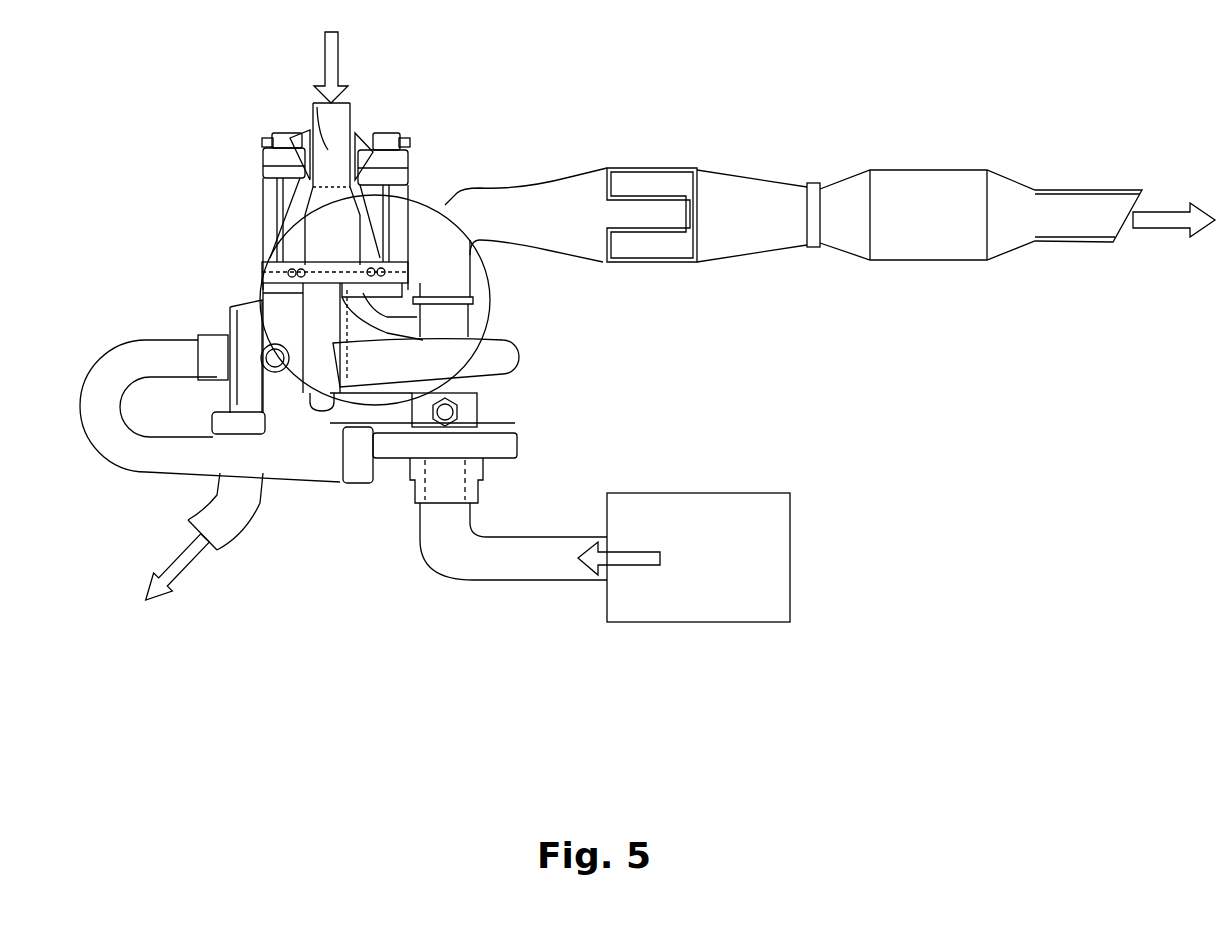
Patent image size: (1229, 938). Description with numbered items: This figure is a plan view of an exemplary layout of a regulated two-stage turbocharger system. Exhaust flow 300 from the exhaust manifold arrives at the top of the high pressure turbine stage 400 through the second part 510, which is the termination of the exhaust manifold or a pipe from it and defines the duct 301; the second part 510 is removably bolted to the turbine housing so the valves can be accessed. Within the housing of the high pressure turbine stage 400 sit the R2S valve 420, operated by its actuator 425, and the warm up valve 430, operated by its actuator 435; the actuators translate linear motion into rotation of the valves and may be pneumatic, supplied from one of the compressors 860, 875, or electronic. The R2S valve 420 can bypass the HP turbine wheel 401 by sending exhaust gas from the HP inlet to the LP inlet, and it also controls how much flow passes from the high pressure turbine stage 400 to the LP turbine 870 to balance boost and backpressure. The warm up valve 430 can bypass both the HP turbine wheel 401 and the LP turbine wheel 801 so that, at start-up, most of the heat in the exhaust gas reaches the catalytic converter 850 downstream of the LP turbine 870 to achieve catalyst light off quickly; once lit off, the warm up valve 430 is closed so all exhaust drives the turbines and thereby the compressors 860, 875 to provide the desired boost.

The exhaust flow 300 is at (330, 98).
The duct 301 is at (318, 112).
The second part 510 is at (353, 118).
The actuator 425 is at (268, 158).
The R2S valve 420 is at (280, 260).
The actuator 435 is at (400, 152).
The warm up valve 430 is at (413, 182).
The catalytic converter 850 is at (723, 207).
The LP turbine 870 is at (497, 352).
The LP turbine wheel 801 is at (500, 373).
The compressor 875 is at (493, 447).
The compressor 860 is at (222, 282).
The high pressure turbine stage 400 is at (322, 378).
The HP turbine wheel 401 is at (325, 358).